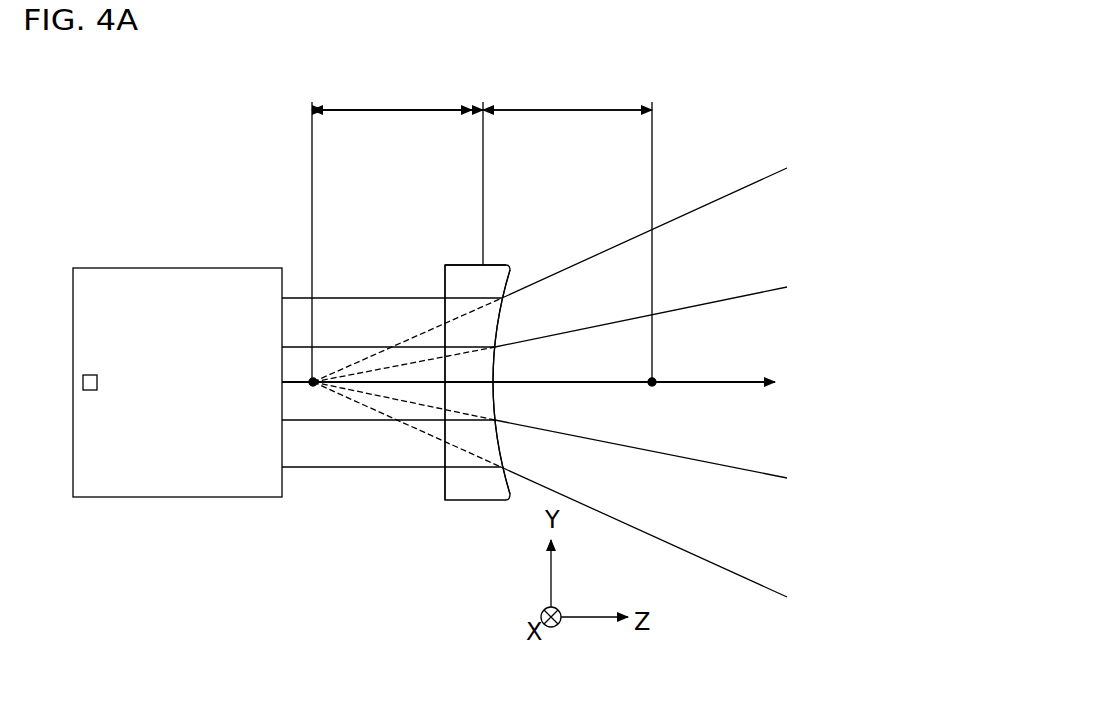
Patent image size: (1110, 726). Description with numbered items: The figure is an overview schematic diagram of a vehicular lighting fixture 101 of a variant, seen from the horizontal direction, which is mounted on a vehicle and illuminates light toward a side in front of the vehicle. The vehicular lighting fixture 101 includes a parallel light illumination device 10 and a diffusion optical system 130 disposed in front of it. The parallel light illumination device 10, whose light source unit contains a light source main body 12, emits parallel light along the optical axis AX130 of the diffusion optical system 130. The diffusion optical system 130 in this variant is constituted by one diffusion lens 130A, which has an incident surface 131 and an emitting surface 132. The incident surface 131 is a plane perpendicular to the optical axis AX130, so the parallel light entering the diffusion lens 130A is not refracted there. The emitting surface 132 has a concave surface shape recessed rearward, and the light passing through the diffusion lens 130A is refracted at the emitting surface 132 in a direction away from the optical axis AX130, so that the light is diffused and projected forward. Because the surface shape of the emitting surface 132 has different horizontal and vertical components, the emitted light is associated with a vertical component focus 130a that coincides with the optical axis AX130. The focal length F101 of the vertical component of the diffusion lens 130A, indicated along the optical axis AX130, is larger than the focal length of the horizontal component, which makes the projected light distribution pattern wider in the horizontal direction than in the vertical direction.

The parallel light illumination device 10 is at (190, 262).
The light source main body 12 is at (90, 375).
The diffusion optical system 130 is at (462, 238).
The incident surface 131 is at (445, 283).
The diffusion lens 130A is at (493, 263).
The emitting surface 132 is at (508, 283).
The vertical component focus 130a is at (312, 388).
The optical axis AX130 is at (425, 385).
The focal length of the vertical component F101 is at (482, 229).
The vehicular lighting fixture 101 is at (812, 98).